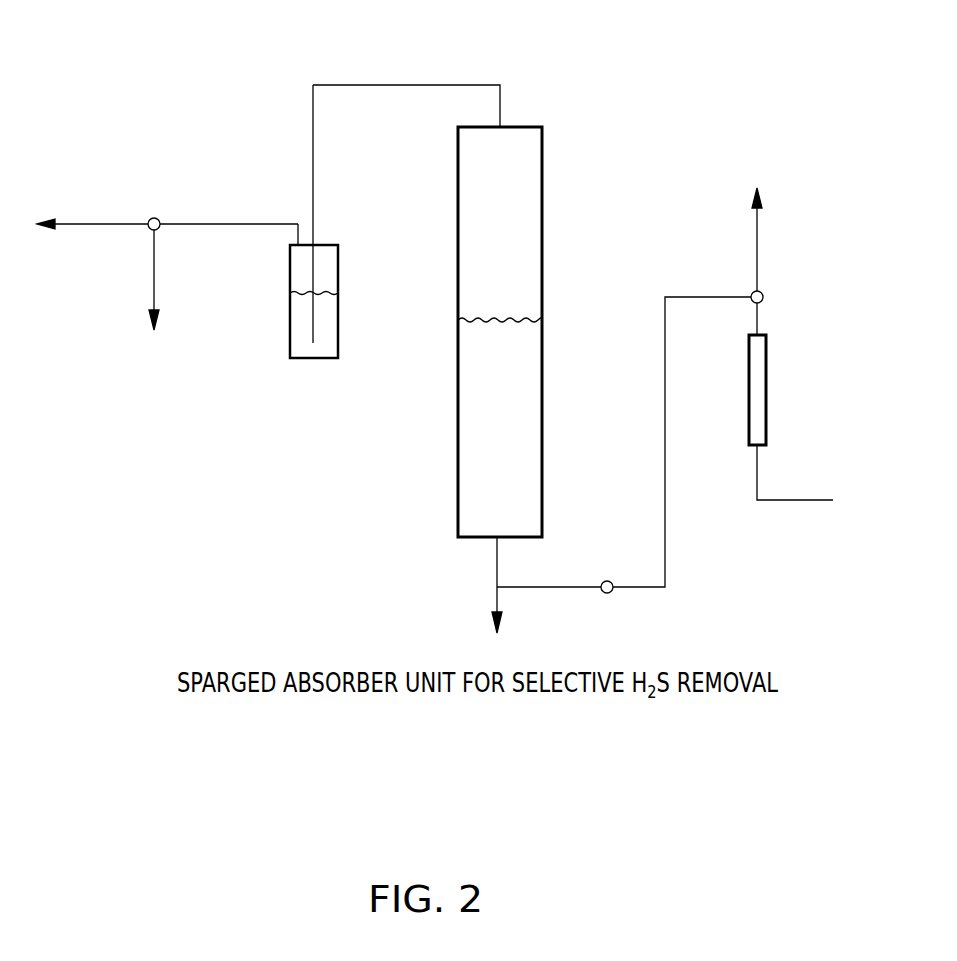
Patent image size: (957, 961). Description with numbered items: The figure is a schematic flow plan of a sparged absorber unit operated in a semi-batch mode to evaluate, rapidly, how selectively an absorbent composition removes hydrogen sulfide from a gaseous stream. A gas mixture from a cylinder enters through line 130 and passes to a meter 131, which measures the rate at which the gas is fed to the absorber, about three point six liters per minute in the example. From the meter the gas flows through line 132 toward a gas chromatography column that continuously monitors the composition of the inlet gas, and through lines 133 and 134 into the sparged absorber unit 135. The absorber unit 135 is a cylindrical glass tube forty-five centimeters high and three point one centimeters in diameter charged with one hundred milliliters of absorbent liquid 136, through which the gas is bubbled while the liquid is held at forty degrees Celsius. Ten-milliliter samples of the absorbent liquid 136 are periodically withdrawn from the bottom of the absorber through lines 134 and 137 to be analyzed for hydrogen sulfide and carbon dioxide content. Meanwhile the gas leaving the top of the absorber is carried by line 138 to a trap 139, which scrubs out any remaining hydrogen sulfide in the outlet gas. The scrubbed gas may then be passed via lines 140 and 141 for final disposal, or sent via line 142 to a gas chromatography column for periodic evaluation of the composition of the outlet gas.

The line 130 is at (790, 498).
The meter 131 is at (766, 370).
The line 132 is at (757, 238).
The line 133 is at (665, 482).
The line 134 is at (500, 545).
The sparged absorber unit 135 is at (542, 228).
The absorbent liquid 136 is at (530, 407).
The line 137 is at (494, 602).
The overhead gas line 138 is at (398, 83).
The trap 139 is at (340, 290).
The line 140 is at (206, 222).
The line 141 is at (157, 255).
The line 142 is at (100, 222).